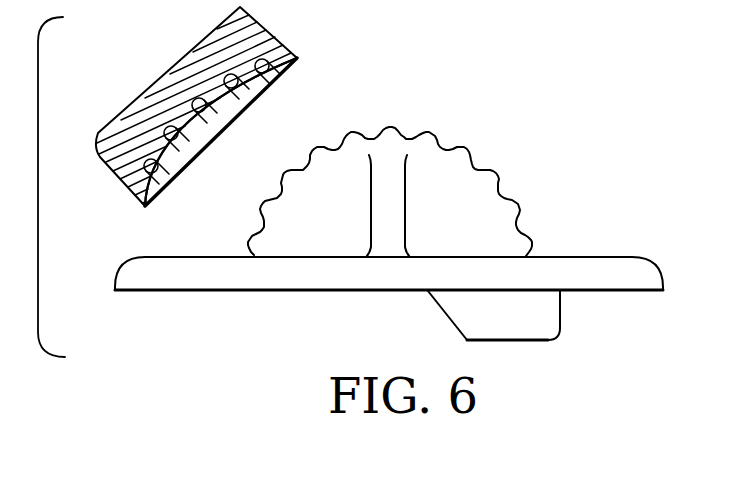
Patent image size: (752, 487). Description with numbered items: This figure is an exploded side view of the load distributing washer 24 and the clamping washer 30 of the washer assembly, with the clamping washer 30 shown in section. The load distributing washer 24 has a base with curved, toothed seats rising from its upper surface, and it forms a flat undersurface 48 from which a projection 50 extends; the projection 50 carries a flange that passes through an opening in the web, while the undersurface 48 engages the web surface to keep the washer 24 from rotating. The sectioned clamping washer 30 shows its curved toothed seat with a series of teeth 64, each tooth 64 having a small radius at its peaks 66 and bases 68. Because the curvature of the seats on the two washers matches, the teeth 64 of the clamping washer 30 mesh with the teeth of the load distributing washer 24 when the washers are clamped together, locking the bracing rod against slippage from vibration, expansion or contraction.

The load distributing washer 24 is at (502, 133).
The clamping washer 30 is at (195, 46).
The flat undersurface 48 is at (188, 292).
The projection 50 is at (562, 312).
The teeth 64 is at (207, 130).
The peaks 66 is at (176, 166).
The bases 68 is at (166, 187).